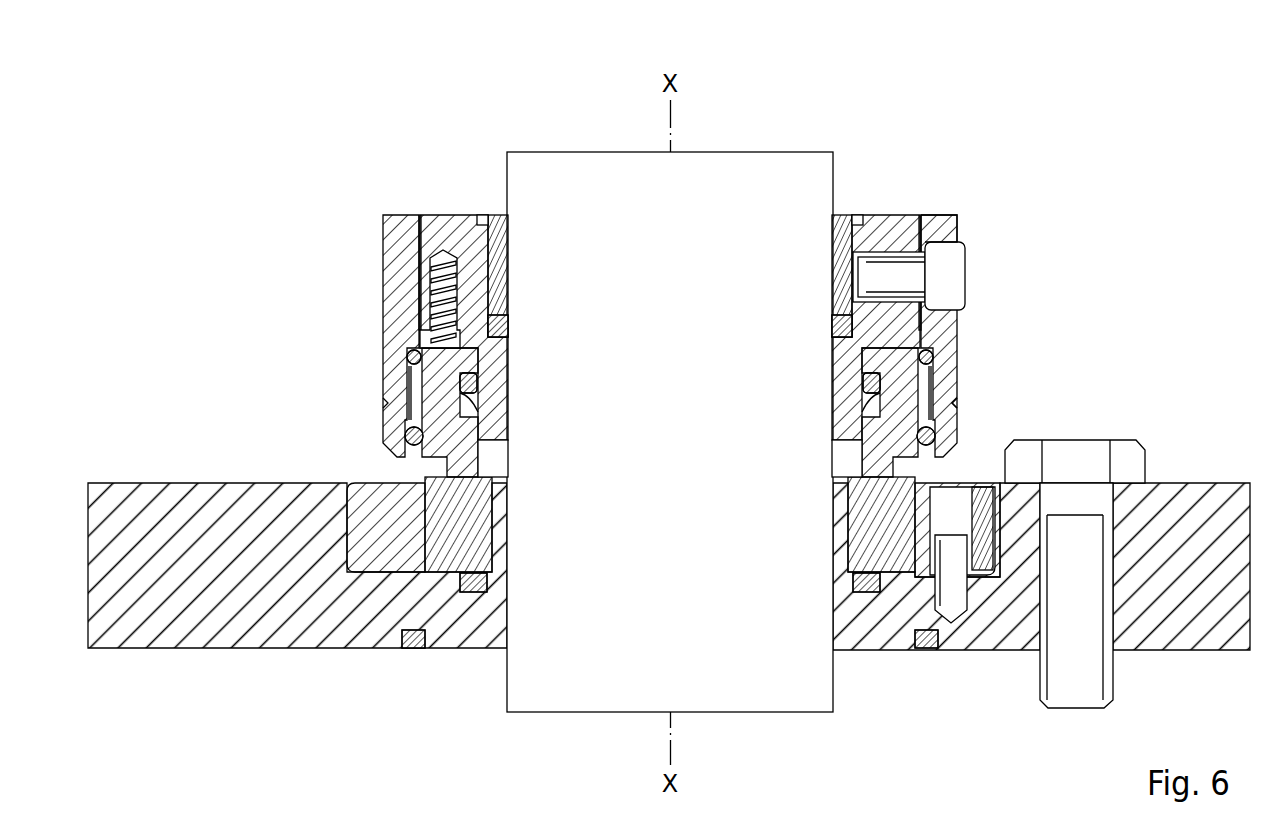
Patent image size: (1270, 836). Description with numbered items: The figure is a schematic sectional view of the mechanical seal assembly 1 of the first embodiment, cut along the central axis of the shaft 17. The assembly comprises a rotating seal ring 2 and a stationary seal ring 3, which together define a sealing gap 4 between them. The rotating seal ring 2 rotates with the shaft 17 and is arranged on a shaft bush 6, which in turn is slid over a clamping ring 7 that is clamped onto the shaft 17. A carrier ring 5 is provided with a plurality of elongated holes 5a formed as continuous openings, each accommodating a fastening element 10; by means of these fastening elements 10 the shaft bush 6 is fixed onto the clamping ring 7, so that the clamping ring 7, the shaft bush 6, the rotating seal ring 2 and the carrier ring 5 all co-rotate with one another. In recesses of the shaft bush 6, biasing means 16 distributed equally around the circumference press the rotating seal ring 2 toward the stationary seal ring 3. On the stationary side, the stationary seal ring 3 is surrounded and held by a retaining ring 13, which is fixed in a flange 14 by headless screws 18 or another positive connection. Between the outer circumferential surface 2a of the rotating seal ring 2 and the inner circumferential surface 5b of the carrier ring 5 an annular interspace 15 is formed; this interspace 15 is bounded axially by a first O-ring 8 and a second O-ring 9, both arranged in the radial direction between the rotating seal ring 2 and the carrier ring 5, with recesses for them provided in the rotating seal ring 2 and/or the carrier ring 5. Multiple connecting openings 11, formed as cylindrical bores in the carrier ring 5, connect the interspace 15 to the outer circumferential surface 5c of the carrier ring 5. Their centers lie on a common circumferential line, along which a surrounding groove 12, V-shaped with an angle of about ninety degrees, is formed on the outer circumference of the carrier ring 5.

The mechanical seal assembly 1 is at (925, 70).
The rotating seal ring 2 is at (443, 452).
The outer circumferential surface of the rotating seal ring 2a is at (403, 412).
The stationary seal ring 3 is at (443, 548).
The sealing gap 4 is at (495, 466).
The carrier ring 5 is at (943, 215).
The elongated holes 5a is at (955, 232).
The inner circumferential surface of the carrier ring 5b is at (407, 378).
The outer circumferential surface of the carrier ring 5c is at (960, 380).
The shaft bush 6 is at (890, 215).
The clamping ring 7 is at (840, 215).
The first O-ring 8 is at (933, 356).
The second O-ring 9 is at (933, 440).
The fastening element 10 is at (968, 282).
The connecting openings 11 is at (943, 394).
The surrounding groove 12 is at (388, 403).
The retaining ring 13 is at (393, 548).
The flange 14 is at (1155, 645).
The annular interspace 15 is at (952, 418).
The biasing means 16 is at (437, 273).
The shaft 17 is at (779, 152).
The headless screws 18 is at (960, 598).